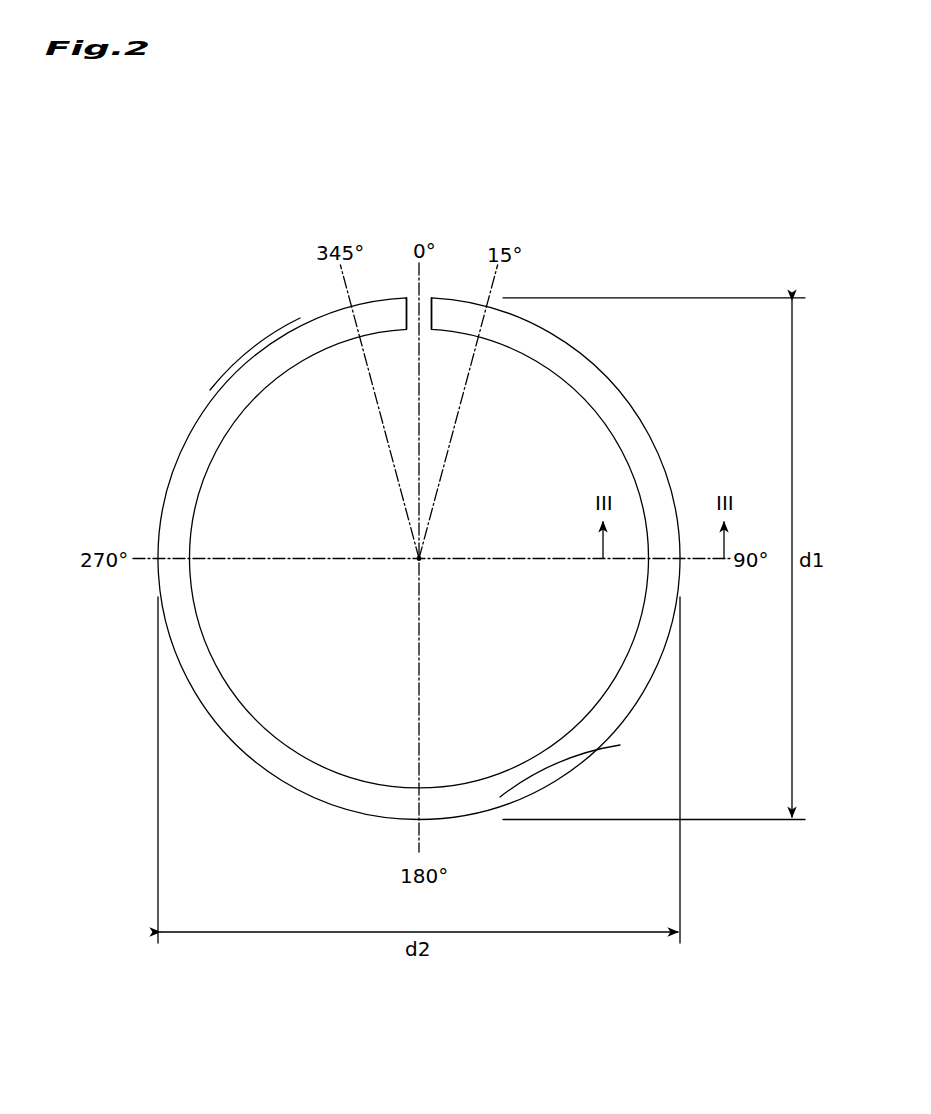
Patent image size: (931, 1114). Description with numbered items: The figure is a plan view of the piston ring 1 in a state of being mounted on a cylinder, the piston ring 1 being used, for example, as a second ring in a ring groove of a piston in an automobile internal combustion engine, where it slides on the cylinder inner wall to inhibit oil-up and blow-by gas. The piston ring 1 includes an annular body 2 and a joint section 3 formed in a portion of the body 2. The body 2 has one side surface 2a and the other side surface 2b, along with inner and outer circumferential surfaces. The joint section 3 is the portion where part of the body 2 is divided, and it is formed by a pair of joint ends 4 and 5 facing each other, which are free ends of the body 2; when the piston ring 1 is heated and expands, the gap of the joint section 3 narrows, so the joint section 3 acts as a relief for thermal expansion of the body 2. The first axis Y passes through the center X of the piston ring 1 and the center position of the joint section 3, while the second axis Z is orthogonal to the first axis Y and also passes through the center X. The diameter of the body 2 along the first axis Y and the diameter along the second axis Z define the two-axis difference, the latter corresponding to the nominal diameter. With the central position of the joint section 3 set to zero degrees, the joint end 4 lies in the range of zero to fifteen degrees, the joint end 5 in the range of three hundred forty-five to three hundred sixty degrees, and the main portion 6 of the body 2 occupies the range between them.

The piston ring 1 is at (666, 235).
The body 2 is at (449, 493).
The side surface 2a is at (255, 340).
The side surface 2b is at (258, 365).
The joint section 3 is at (497, 163).
The joint end 4 is at (458, 315).
The joint end 5 is at (382, 315).
The main portion 6 is at (543, 770).
The center X is at (416, 561).
The first axis Y is at (421, 277).
The second axis Z is at (230, 558).